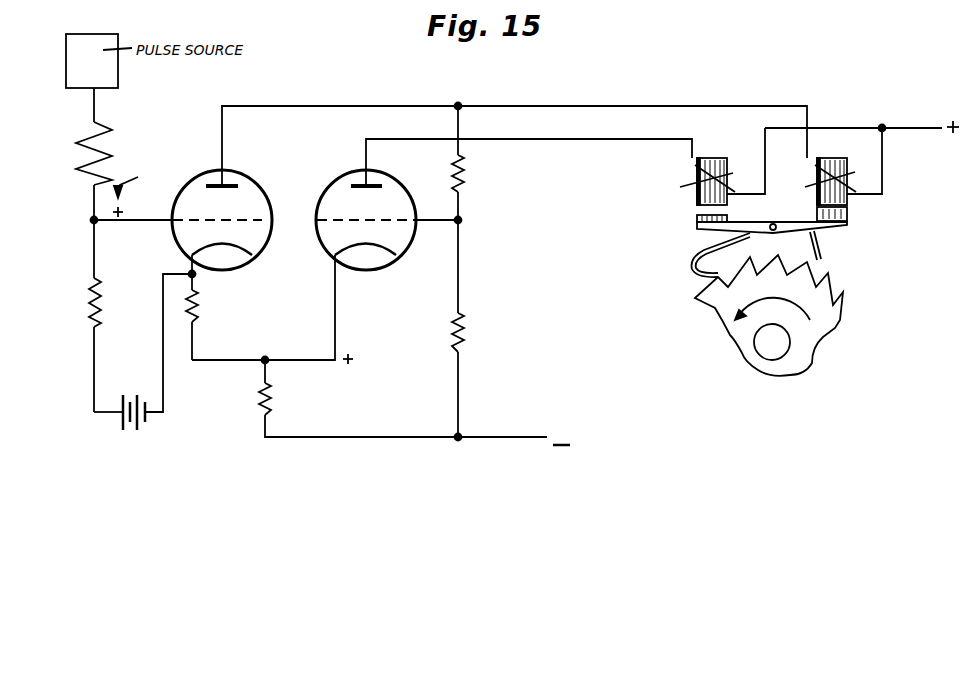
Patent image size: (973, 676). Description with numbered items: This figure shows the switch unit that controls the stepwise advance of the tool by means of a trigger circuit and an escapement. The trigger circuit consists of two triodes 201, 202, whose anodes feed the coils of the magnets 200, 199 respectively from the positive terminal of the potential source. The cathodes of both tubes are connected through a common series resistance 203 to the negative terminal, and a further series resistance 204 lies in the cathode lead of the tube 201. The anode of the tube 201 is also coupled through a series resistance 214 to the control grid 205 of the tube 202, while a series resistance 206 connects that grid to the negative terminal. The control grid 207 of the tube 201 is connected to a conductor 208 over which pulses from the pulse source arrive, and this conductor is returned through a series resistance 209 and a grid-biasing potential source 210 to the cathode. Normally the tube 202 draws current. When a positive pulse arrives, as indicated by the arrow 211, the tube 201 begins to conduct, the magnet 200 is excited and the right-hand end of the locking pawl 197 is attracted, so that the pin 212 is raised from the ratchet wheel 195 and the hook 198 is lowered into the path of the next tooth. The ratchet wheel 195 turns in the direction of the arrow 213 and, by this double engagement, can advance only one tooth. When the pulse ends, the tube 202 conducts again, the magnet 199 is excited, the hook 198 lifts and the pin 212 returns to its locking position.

The ratchet wheel 195 is at (832, 328).
The locking pawl 197 is at (827, 229).
The hook 198 is at (690, 253).
The magnet 199 is at (697, 183).
The magnet 200 is at (847, 204).
The triode 201 is at (248, 262).
The triode 202 is at (390, 257).
The series resistance 203 is at (270, 403).
The series resistance 204 is at (197, 318).
The control grid 205 is at (384, 217).
The series resistance 206 is at (467, 337).
The control grid 207 is at (248, 217).
The conductor 208 is at (92, 205).
The series resistance 209 is at (92, 299).
The grid-biasing potential source 210 is at (132, 432).
The arrow 211 is at (143, 186).
The pin 212 is at (823, 262).
The arrow 213 is at (746, 310).
The series resistance 214 is at (463, 178).